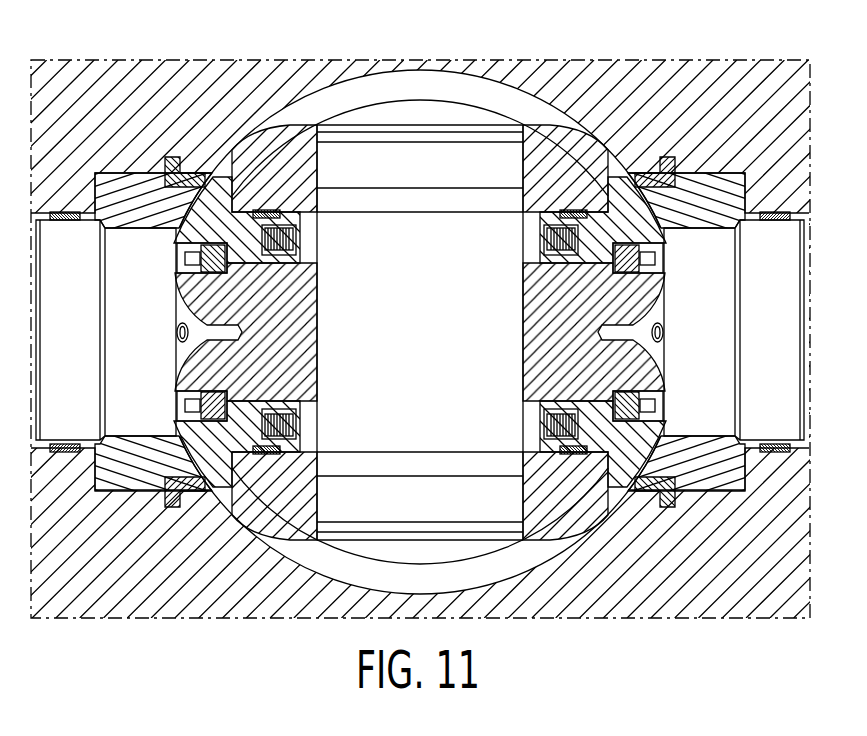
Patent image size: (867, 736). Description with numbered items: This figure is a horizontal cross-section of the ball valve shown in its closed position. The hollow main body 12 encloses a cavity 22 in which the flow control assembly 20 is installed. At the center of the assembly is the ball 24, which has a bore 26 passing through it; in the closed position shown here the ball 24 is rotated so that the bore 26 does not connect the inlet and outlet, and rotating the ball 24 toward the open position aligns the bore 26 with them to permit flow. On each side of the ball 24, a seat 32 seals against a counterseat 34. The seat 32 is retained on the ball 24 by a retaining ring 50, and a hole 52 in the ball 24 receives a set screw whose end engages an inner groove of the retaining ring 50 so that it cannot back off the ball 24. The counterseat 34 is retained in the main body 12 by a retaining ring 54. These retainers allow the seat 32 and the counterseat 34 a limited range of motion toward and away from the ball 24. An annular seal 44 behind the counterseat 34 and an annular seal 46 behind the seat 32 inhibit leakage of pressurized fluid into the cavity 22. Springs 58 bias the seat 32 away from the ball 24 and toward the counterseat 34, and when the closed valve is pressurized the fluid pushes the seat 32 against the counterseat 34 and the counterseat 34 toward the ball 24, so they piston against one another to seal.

The main body 12 is at (78, 610).
The flow control assembly 20 is at (262, 543).
The cavity 22 is at (340, 570).
The ball 24 is at (550, 150).
The bore 26 is at (318, 333).
The seat 32 is at (197, 431).
The counterseat 34 is at (88, 445).
The annular seal 44 is at (68, 219).
The annular seal 46 is at (262, 211).
The retaining ring 50 is at (207, 403).
The hole 52 is at (176, 333).
The retaining ring 54 is at (195, 175).
The spring 58 is at (300, 237).